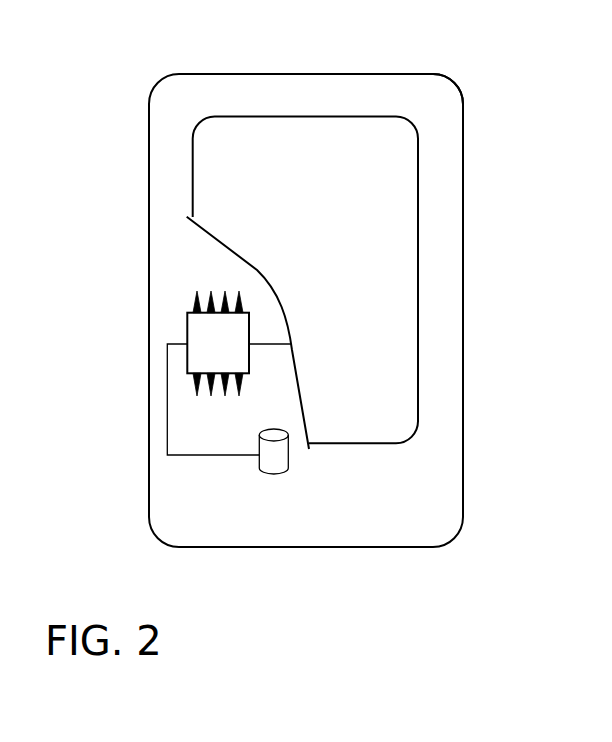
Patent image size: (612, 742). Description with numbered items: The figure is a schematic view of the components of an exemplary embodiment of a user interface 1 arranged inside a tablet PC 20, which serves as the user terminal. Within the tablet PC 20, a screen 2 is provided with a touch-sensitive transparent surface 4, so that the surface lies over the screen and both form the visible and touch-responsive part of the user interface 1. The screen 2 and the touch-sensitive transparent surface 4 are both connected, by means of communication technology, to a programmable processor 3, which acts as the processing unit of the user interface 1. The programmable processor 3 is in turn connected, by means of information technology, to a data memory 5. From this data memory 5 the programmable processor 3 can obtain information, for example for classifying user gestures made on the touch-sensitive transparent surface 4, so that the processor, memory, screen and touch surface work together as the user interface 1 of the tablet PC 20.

The user interface 1 is at (145, 62).
The screen 2 is at (363, 116).
The programmable processor 3 is at (187, 329).
The touch-sensitive transparent surface 4 is at (252, 165).
The data memory 5 is at (272, 474).
The tablet PC 20 is at (454, 86).